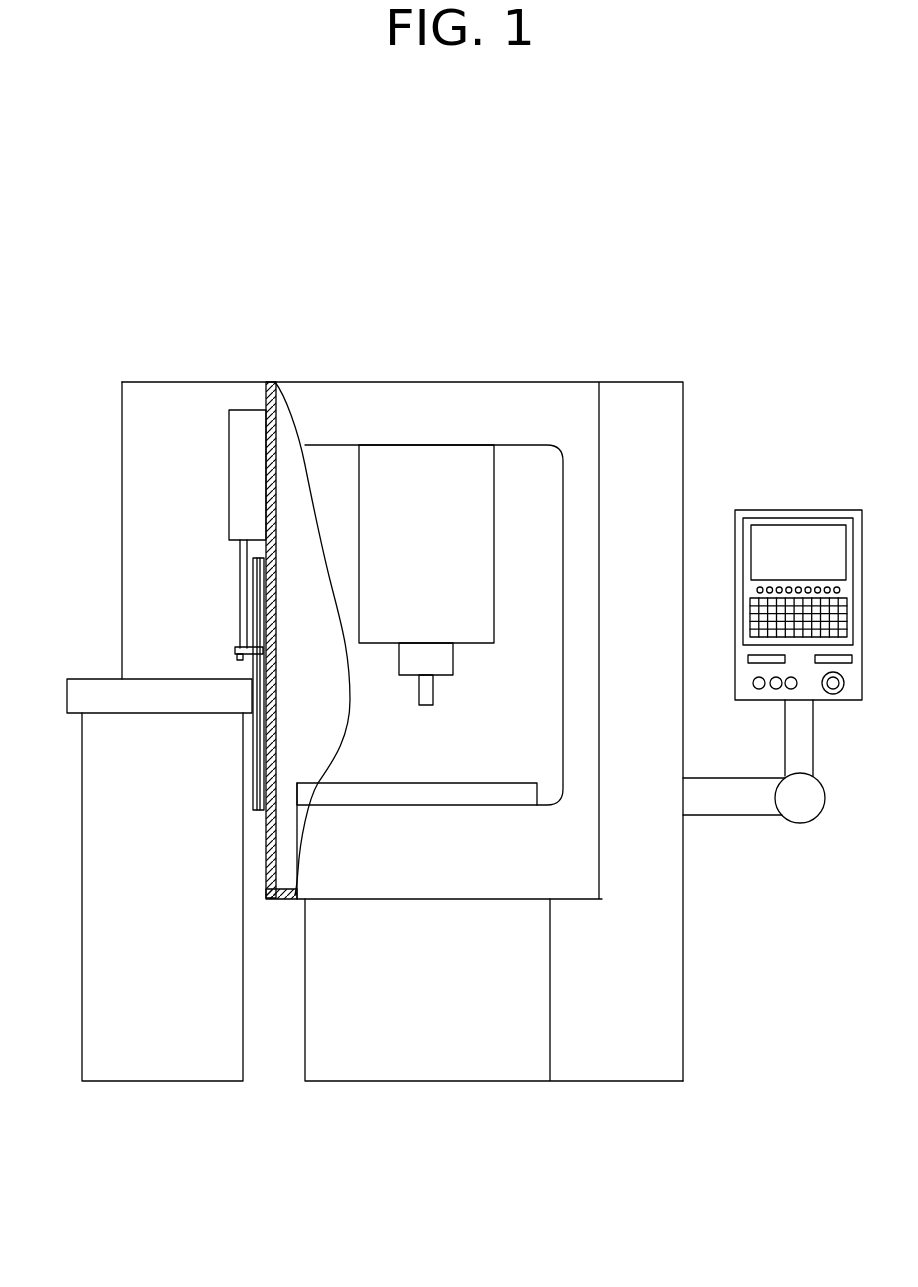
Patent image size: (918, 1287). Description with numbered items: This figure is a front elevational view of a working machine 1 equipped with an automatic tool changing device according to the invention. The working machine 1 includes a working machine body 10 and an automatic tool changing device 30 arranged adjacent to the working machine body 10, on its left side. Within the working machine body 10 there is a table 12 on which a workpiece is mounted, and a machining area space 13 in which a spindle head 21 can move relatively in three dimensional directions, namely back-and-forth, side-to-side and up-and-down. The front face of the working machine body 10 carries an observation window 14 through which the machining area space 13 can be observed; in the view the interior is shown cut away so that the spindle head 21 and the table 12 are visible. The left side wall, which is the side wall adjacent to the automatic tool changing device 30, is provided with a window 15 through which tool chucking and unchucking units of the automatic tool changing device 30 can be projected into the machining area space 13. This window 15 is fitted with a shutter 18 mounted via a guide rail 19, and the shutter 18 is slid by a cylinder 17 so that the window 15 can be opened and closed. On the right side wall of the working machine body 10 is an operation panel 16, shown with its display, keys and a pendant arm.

The working machine 1 is at (735, 340).
The working machine body 10 is at (602, 1068).
The table 12 is at (502, 793).
The machining area space 13 is at (300, 495).
The observation window 14 is at (562, 497).
The window 15 is at (277, 698).
The operation panel 16 is at (800, 535).
The cylinder 17 is at (242, 452).
The shutter 18 is at (240, 653).
The guide rail 19 is at (257, 590).
The spindle head 21 is at (475, 635).
The automatic tool changing device 30 is at (165, 1070).